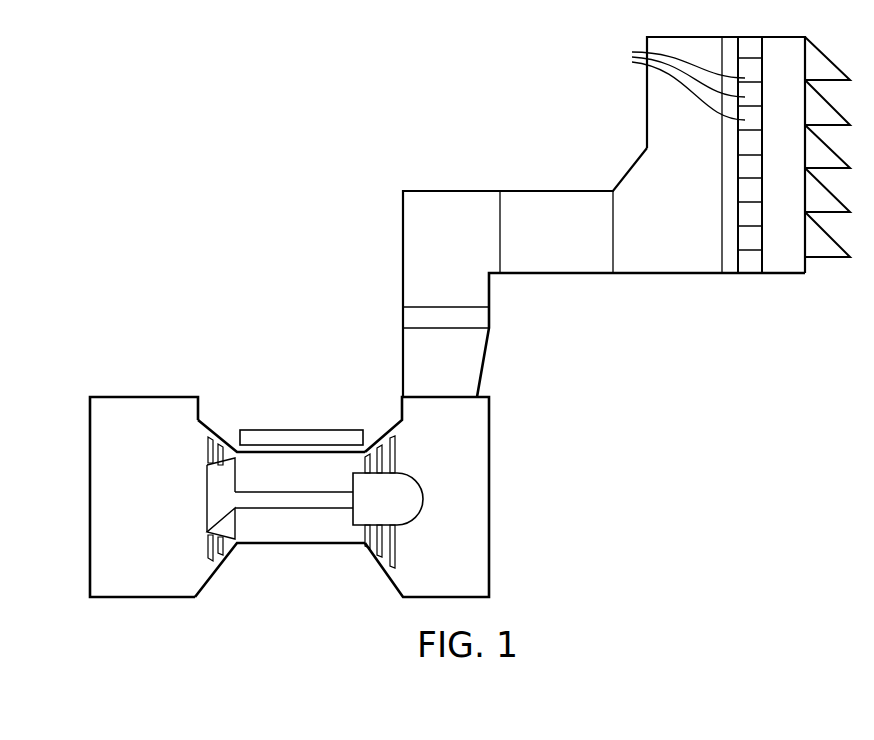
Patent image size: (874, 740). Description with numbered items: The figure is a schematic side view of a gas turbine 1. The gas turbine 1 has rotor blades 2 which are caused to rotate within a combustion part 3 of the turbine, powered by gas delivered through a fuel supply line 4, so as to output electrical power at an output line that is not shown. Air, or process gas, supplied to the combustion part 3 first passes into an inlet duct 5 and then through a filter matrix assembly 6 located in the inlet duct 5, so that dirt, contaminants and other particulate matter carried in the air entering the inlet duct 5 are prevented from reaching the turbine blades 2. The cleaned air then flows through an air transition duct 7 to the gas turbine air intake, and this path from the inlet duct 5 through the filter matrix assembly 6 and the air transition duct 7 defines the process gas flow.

The gas turbine 1 is at (108, 400).
The rotor blades 2 is at (376, 547).
The combustion part 3 is at (390, 578).
The fuel supply line 4 is at (255, 430).
The inlet duct 5 is at (750, 275).
The filter matrix assembly 6 is at (680, 86).
The air transition duct 7 is at (485, 295).